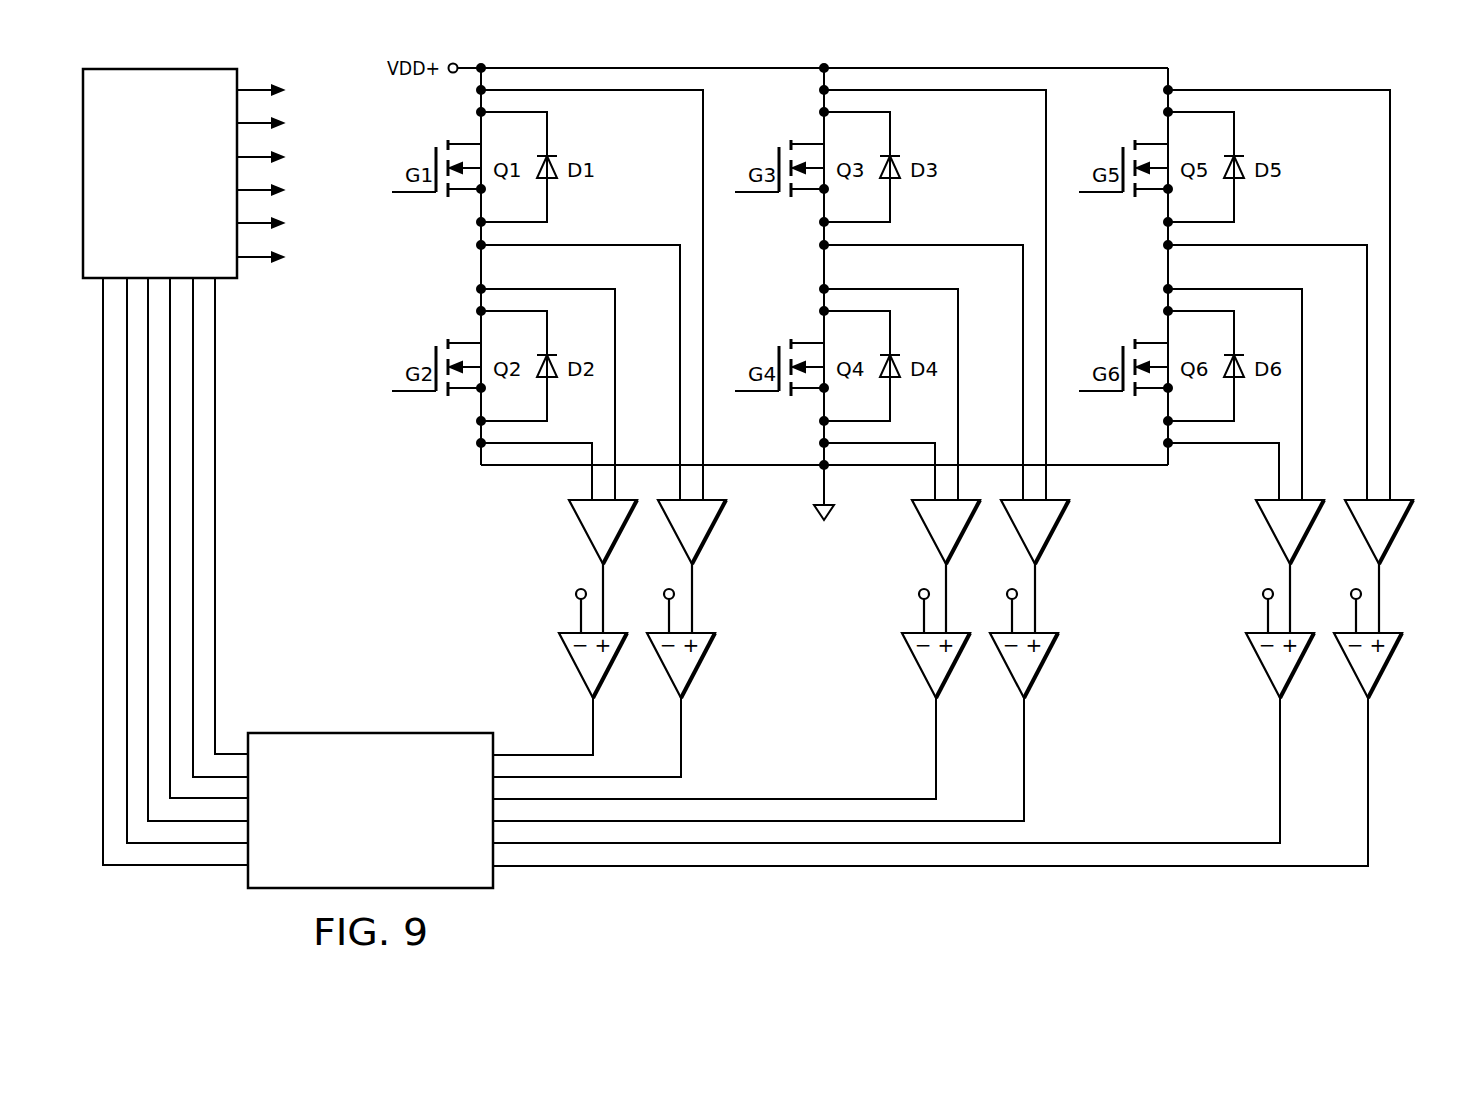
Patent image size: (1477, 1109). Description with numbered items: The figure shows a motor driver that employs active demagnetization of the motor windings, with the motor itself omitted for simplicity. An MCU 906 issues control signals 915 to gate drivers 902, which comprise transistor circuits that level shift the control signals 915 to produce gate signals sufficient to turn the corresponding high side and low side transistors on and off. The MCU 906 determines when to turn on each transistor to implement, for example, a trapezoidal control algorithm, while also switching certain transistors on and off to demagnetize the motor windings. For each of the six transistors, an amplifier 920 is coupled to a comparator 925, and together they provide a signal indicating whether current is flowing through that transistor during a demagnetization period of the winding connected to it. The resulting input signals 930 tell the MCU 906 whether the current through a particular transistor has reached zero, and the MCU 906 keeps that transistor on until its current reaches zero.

The gate drivers 902 is at (139, 219).
The MCU 906 is at (370, 732).
The control signals 915 is at (226, 544).
The amplifier 920 is at (583, 535).
The comparator 925 is at (573, 668).
The input signals 930 is at (536, 880).